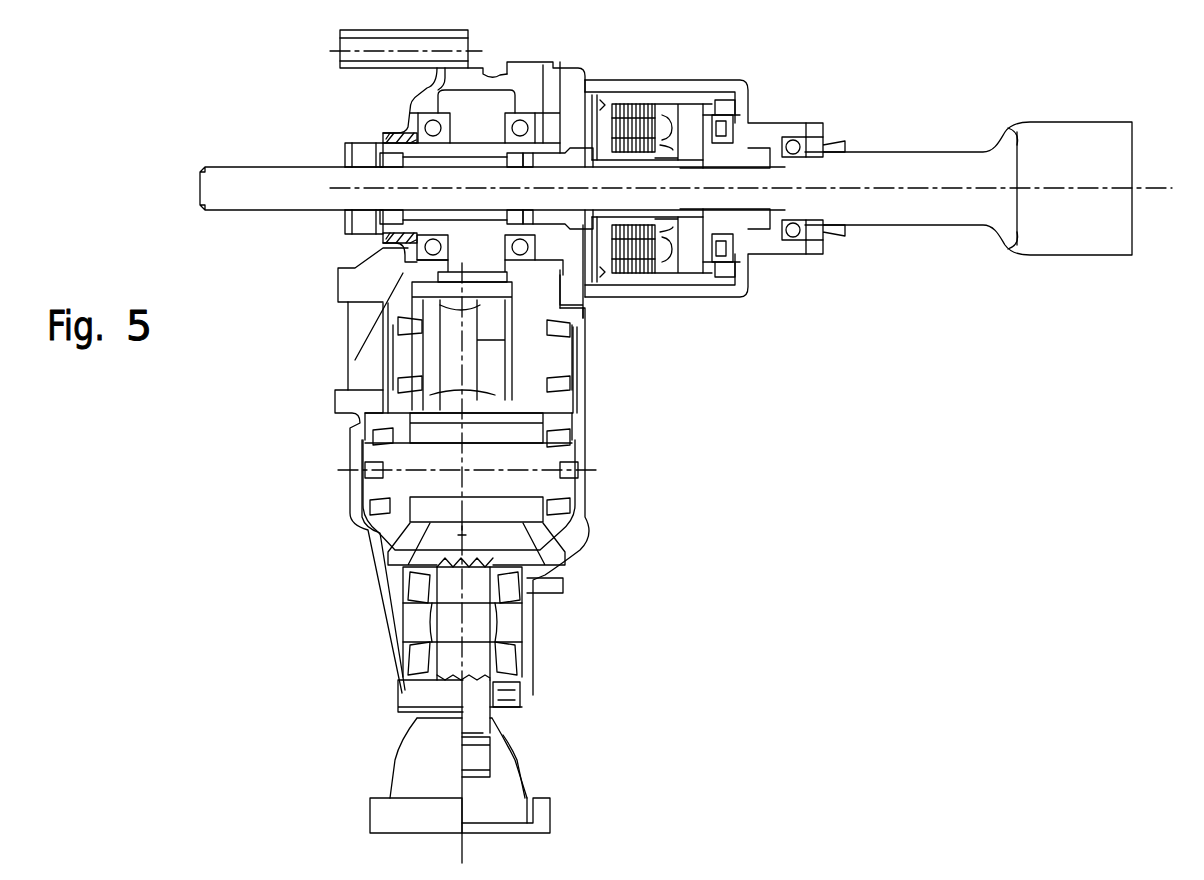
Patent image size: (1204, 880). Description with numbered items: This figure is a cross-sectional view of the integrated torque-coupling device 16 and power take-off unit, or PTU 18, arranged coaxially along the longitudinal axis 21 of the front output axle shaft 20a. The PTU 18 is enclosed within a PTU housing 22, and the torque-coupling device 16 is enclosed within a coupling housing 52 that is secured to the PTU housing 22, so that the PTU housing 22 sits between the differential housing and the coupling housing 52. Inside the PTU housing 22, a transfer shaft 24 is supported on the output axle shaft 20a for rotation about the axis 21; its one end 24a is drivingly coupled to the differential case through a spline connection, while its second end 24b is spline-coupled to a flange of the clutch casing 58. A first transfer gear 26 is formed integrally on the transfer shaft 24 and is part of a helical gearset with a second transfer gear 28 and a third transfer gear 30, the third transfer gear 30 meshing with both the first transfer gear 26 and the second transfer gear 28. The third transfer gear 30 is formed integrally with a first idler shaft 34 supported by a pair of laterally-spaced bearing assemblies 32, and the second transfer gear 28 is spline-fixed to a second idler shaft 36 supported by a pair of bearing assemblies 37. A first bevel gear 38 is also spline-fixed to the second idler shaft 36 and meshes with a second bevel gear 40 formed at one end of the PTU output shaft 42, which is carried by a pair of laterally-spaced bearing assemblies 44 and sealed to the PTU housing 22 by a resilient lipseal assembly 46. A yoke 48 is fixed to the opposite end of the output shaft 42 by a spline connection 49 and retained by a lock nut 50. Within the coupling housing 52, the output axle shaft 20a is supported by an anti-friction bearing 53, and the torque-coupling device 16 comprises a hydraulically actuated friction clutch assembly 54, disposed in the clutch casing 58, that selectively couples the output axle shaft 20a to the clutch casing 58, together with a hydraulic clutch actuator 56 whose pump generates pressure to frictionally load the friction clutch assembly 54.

The torque-coupling device 16 is at (692, 78).
The PTU 18 is at (362, 538).
The front output axle shaft 20a is at (895, 170).
The longitudinal axis 21 is at (1148, 192).
The PTU housing 22 is at (352, 393).
The transfer shaft 24 is at (383, 138).
The one end of the transfer shaft 24a is at (345, 242).
The second end of the transfer shaft 24b is at (537, 145).
The first transfer gear 26 is at (475, 113).
The second transfer gear 28 is at (363, 437).
The third transfer gear 30 is at (340, 297).
The bearing assemblies 32 is at (571, 385).
The first idler shaft 34 is at (430, 357).
The second idler shaft 36 is at (357, 495).
The bearing assemblies 37 is at (567, 430).
The first bevel gear 38 is at (570, 527).
The second bevel gear 40 is at (387, 585).
The output shaft 42 is at (478, 623).
The bearing assemblies 44 is at (412, 597).
The resilient lipseal assembly 46 is at (507, 710).
The yoke 48 is at (541, 815).
The spline connection 49 is at (433, 747).
The lock nut 50 is at (477, 753).
The coupling housing 52 is at (748, 122).
The anti-friction bearing 53 is at (793, 238).
The friction clutch assembly 54 is at (624, 106).
The hydraulic clutch actuator 56 is at (694, 283).
The clutch casing 58 is at (695, 101).